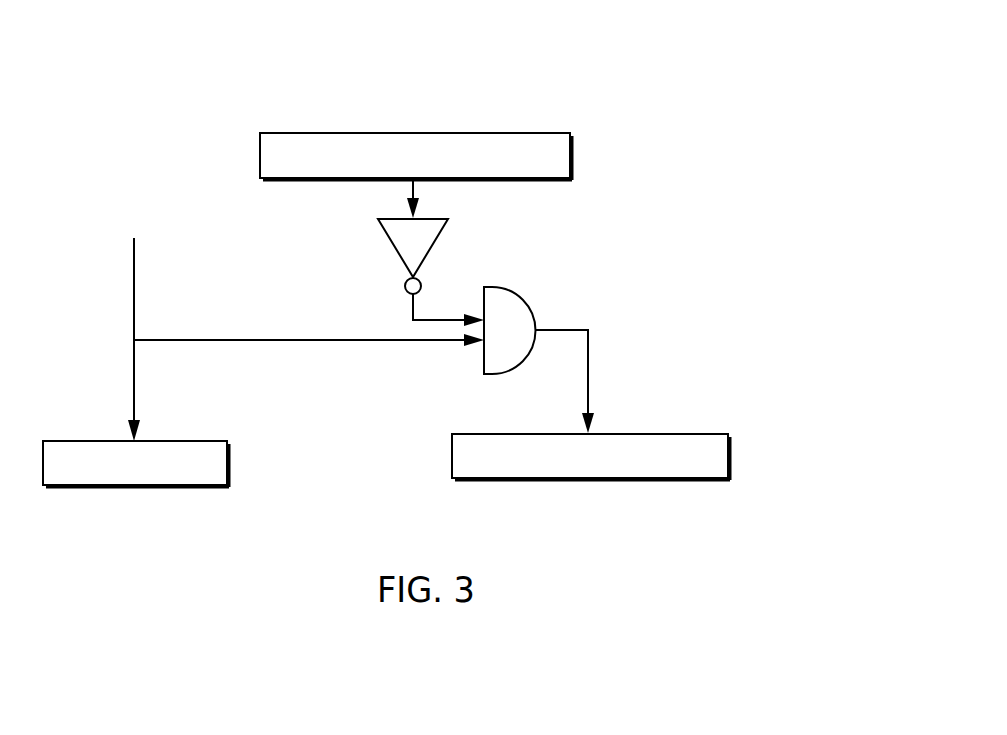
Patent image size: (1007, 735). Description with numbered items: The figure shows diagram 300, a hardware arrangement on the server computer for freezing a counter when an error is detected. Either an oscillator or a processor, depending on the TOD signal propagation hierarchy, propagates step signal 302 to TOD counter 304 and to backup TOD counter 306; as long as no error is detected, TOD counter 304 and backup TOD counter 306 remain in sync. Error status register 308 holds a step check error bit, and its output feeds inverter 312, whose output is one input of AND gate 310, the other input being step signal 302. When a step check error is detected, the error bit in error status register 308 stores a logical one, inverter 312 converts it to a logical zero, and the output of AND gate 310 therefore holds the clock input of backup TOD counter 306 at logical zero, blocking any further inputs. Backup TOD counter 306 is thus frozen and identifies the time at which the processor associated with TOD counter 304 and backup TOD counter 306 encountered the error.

The diagram 300 is at (700, 66).
The step signal 302 is at (136, 262).
The TOD counter 304 is at (230, 465).
The backup TOD counter 306 is at (731, 456).
The error status register 308 is at (527, 133).
The AND gate 310 is at (534, 313).
The inverter 312 is at (439, 235).